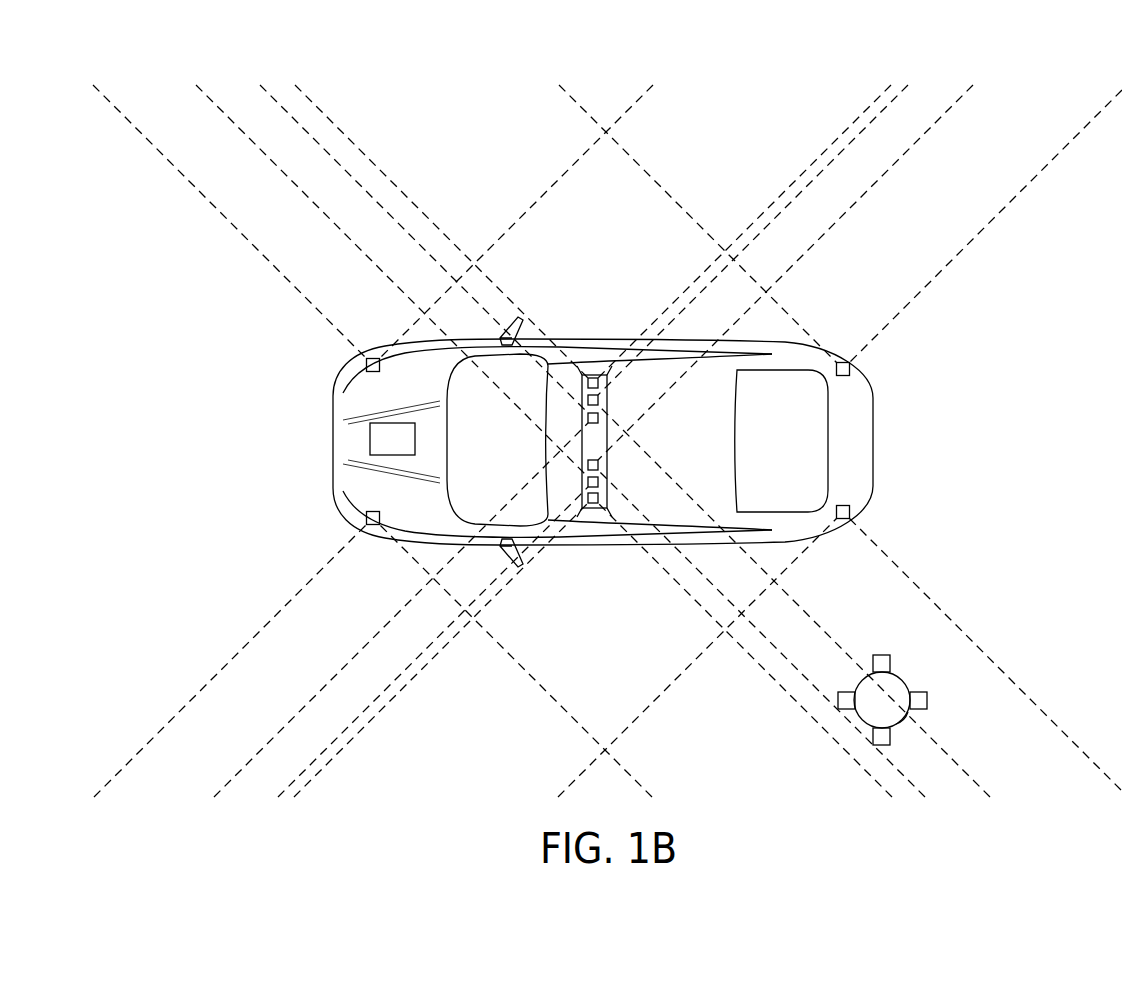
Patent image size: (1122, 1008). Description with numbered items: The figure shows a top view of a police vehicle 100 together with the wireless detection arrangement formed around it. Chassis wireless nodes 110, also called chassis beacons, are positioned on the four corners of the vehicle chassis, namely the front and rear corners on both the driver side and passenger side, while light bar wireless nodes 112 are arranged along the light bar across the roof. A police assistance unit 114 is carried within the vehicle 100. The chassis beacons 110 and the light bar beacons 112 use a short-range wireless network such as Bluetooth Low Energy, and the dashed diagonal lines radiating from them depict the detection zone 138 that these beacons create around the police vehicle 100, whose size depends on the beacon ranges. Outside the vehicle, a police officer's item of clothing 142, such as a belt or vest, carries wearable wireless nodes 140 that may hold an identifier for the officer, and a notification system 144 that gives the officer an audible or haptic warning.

The police vehicle 100 is at (876, 440).
The chassis wireless nodes 110 is at (367, 365).
The light bar wireless nodes 112 is at (592, 377).
The police assistance unit 114 is at (409, 450).
The detection zone 138 is at (855, 247).
The wearable wireless nodes 140 is at (880, 655).
The item of clothing 142 is at (895, 668).
The notification system 144 is at (905, 716).